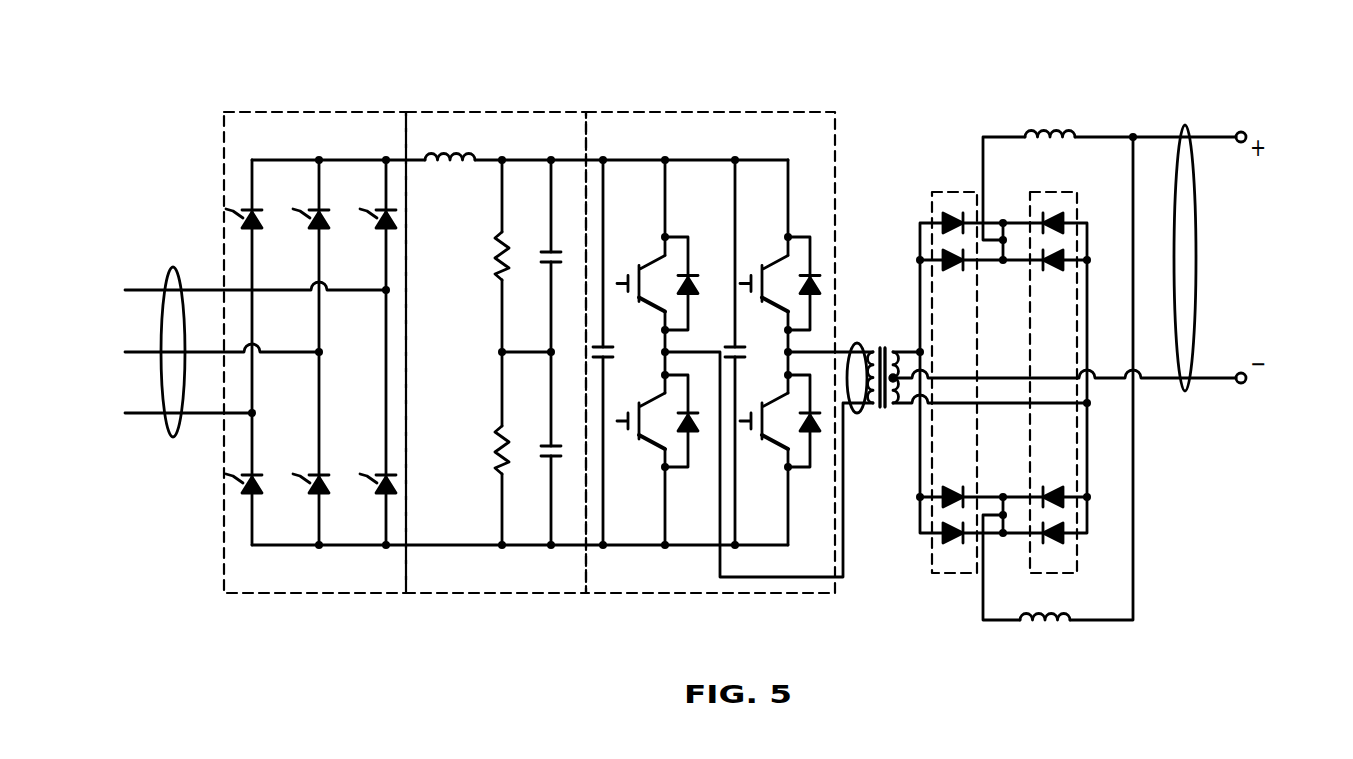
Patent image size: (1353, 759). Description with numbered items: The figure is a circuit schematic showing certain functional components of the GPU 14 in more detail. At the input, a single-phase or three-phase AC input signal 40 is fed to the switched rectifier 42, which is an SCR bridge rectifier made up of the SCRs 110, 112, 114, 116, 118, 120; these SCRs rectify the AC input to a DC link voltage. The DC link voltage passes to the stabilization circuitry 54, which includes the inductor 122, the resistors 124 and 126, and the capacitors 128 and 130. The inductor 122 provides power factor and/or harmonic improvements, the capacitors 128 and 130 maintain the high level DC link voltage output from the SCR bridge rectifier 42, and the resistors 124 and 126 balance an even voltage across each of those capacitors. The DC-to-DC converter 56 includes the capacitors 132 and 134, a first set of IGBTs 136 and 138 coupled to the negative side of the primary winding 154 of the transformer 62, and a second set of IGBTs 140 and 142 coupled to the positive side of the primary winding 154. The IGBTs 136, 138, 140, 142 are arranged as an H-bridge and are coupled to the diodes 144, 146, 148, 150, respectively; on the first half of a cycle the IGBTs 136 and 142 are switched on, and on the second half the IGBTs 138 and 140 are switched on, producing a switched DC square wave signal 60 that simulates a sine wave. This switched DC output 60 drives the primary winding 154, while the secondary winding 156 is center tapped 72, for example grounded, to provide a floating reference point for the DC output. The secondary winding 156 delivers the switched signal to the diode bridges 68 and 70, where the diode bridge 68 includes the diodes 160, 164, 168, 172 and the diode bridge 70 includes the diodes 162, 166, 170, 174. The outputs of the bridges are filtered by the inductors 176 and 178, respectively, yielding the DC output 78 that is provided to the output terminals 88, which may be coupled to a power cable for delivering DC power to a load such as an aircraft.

The GPU 14 is at (736, 58).
The AC input signal 40 is at (166, 290).
The switched rectifier 42 is at (326, 110).
The stabilization circuitry 54 is at (531, 110).
The DC-to-DC converter 56 is at (723, 110).
The switched DC square wave signal 60 is at (857, 412).
The transformer 62 is at (876, 350).
The diode bridge 68 is at (930, 208).
The diode bridge 70 is at (1080, 209).
The center tap 72 is at (898, 377).
The DC output 78 is at (1182, 134).
The output terminals 88 is at (1247, 134).
The SCR 110 is at (232, 213).
The SCR 112 is at (308, 222).
The SCR 114 is at (376, 222).
The SCR 116 is at (232, 478).
The SCR 118 is at (308, 487).
The SCR 120 is at (376, 487).
The inductor 122 is at (463, 152).
The resistor 124 is at (496, 268).
The resistor 126 is at (497, 449).
The capacitor 128 is at (545, 447).
The capacitor 130 is at (546, 264).
The capacitor 132 is at (606, 345).
The capacitor 134 is at (760, 334).
The IGBT 136 is at (652, 316).
The IGBT 138 is at (652, 455).
The IGBT 140 is at (778, 266).
The IGBT 142 is at (778, 404).
The diode 144 is at (695, 287).
The diode 146 is at (693, 432).
The diode 148 is at (816, 285).
The diode 150 is at (813, 432).
The primary winding 154 is at (875, 405).
The secondary winding 156 is at (892, 352).
The diode 160 is at (962, 215).
The diode 162 is at (1050, 215).
The diode 164 is at (962, 270).
The diode 166 is at (1050, 270).
The diode 168 is at (962, 488).
The diode 170 is at (1050, 488).
The diode 172 is at (962, 542).
The diode 174 is at (1052, 542).
The inductor 176 is at (1037, 130).
The inductor 178 is at (1072, 626).